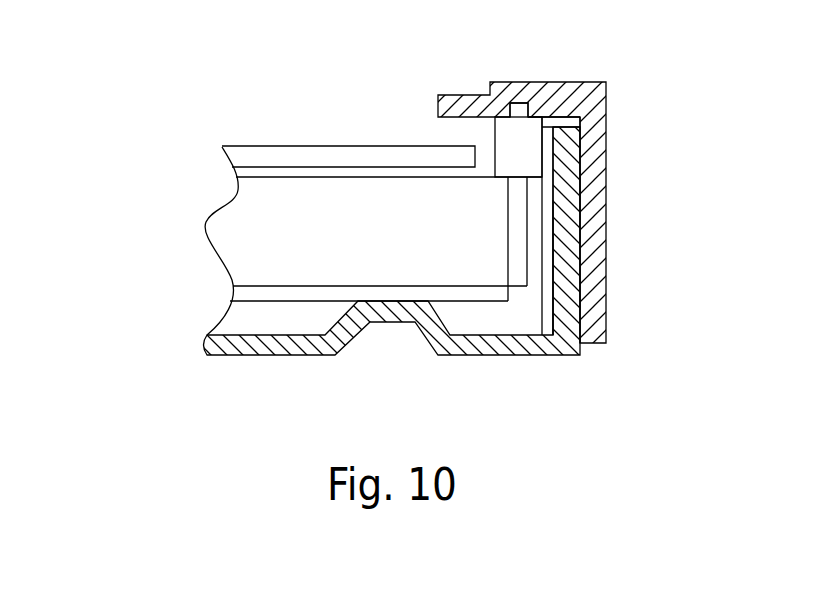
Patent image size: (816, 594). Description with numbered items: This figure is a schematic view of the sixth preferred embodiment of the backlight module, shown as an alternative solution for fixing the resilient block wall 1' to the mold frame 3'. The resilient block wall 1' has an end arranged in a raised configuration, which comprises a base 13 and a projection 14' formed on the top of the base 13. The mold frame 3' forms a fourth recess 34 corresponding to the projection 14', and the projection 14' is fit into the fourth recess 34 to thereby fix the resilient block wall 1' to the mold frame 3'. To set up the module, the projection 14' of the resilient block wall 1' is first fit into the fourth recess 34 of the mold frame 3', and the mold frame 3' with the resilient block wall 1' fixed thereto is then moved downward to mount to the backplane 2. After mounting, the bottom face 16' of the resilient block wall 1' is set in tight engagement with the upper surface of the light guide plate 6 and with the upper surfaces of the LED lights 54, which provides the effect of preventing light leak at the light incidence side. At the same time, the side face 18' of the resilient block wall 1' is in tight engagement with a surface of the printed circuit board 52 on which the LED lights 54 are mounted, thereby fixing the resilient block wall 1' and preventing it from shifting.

The backplane 2 is at (316, 350).
The mold frame 3' is at (562, 200).
The projection 14' is at (479, 59).
The fourth recess 34 is at (525, 108).
The resilient block wall 1' is at (413, 101).
The base 13 is at (513, 158).
The side face 18' is at (642, 227).
The bottom face 16' is at (626, 231).
The LED lights 54 is at (535, 258).
The printed circuit board 52 is at (547, 313).
The light guide plate 6 is at (248, 237).